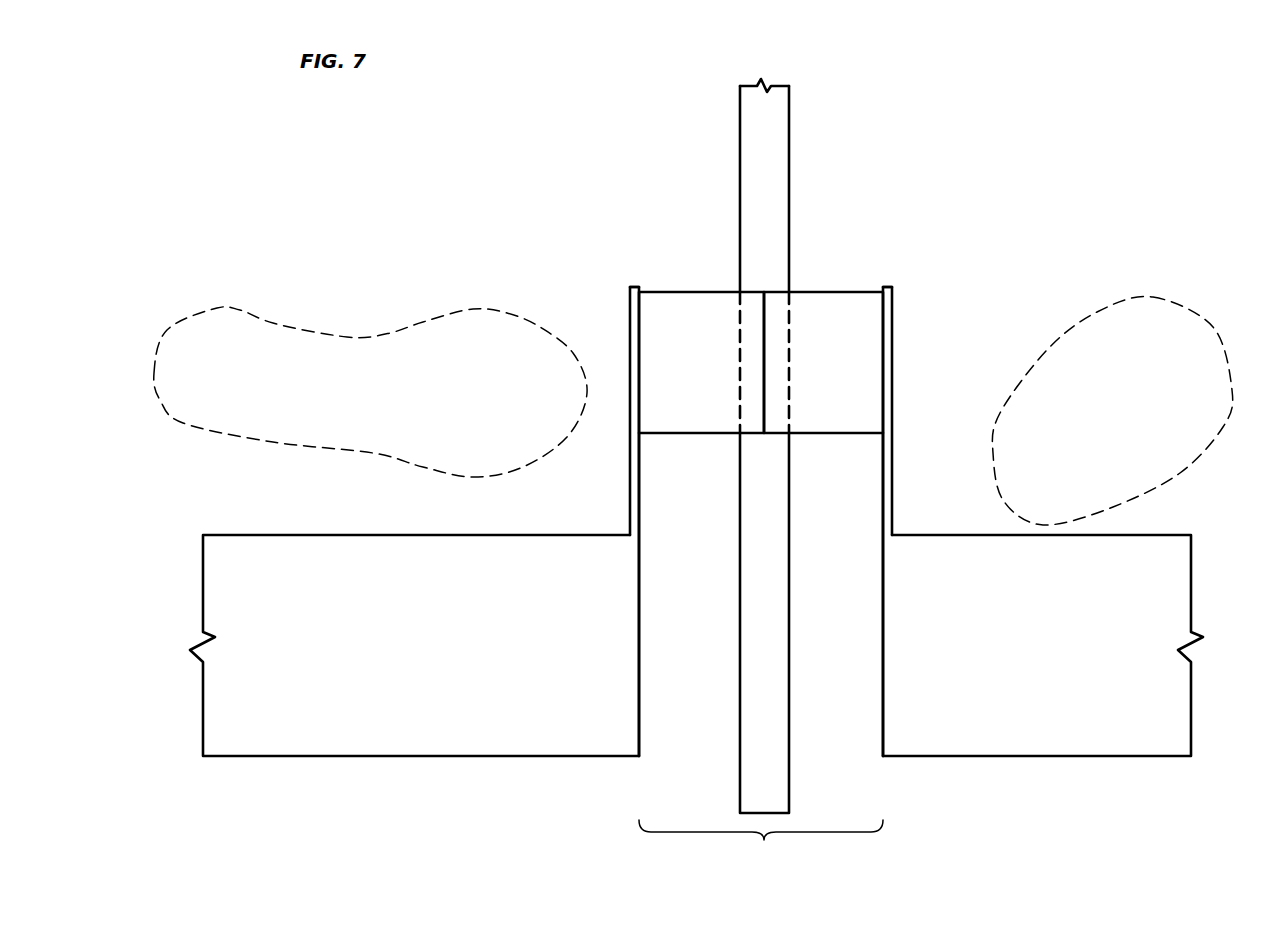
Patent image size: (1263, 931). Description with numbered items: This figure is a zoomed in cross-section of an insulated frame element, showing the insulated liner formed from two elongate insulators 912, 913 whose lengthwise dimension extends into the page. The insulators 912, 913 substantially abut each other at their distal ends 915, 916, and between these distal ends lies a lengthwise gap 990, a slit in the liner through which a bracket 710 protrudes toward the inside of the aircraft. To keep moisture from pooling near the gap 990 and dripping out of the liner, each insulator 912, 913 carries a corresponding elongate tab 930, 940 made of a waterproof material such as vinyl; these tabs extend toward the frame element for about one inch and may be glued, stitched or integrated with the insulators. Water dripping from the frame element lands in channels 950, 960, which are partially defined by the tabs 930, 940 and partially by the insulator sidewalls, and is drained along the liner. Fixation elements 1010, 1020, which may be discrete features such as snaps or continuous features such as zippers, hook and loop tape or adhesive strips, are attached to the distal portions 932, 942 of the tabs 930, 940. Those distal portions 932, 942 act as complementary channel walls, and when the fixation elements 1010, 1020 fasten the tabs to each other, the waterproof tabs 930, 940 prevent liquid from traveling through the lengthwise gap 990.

The bracket 710 is at (750, 764).
The elongate insulator 912 is at (368, 756).
The elongate insulator 913 is at (1053, 756).
The distal end of insulator 915 is at (656, 678).
The distal end of insulator 916 is at (864, 687).
The tab 930 is at (630, 473).
The distal portion of tab 932 is at (606, 288).
The tab 940 is at (893, 458).
The distal portion of tab 942 is at (924, 288).
The channel 950 is at (250, 440).
The channel 960 is at (1180, 300).
The gap 990 is at (761, 842).
The fixation element 1010 is at (696, 292).
The fixation element 1020 is at (860, 292).